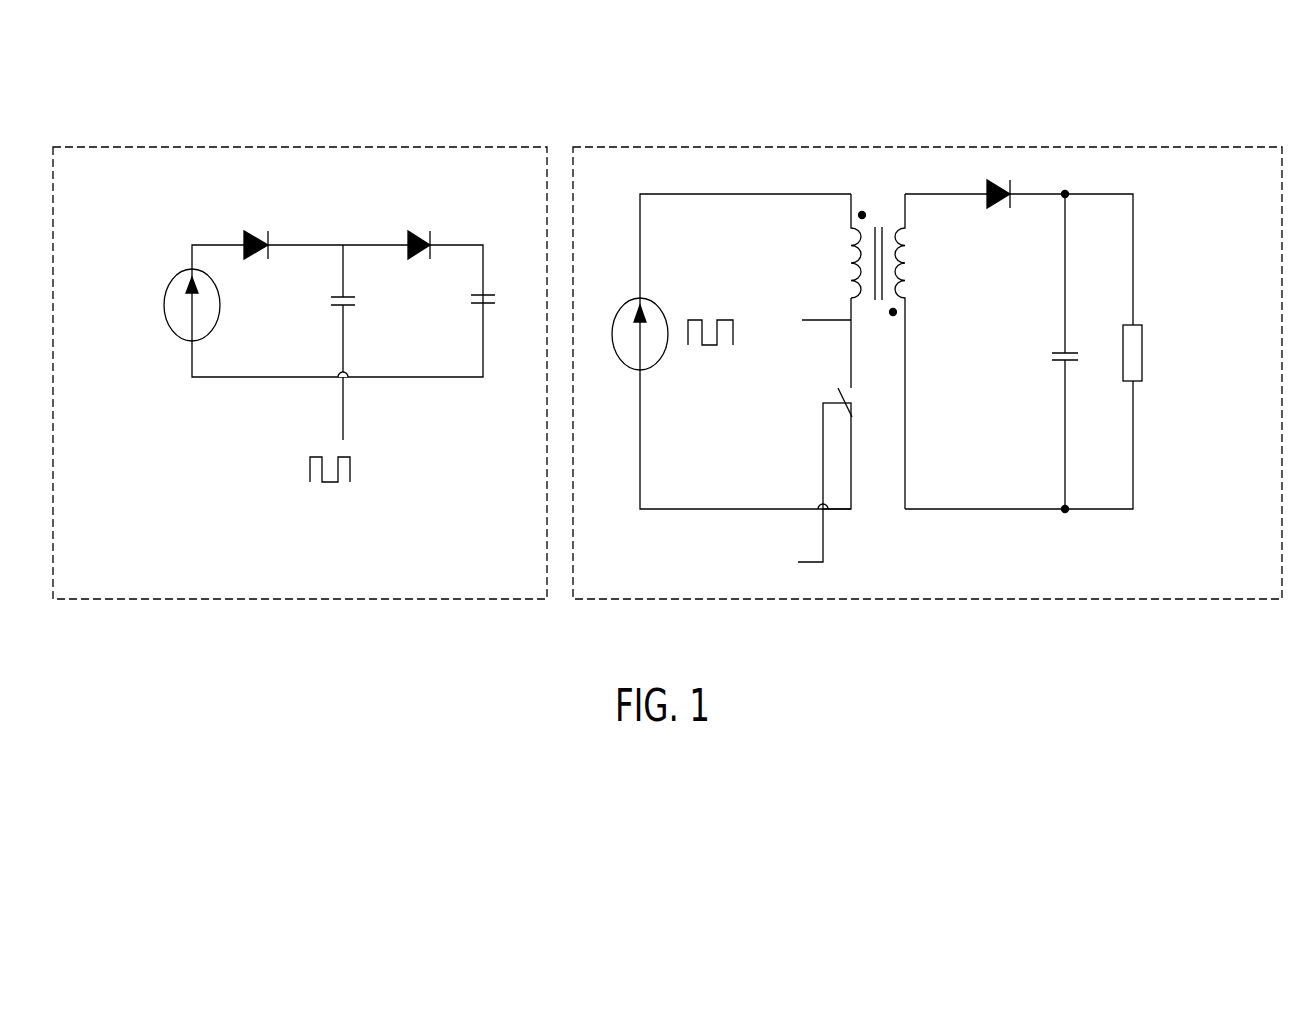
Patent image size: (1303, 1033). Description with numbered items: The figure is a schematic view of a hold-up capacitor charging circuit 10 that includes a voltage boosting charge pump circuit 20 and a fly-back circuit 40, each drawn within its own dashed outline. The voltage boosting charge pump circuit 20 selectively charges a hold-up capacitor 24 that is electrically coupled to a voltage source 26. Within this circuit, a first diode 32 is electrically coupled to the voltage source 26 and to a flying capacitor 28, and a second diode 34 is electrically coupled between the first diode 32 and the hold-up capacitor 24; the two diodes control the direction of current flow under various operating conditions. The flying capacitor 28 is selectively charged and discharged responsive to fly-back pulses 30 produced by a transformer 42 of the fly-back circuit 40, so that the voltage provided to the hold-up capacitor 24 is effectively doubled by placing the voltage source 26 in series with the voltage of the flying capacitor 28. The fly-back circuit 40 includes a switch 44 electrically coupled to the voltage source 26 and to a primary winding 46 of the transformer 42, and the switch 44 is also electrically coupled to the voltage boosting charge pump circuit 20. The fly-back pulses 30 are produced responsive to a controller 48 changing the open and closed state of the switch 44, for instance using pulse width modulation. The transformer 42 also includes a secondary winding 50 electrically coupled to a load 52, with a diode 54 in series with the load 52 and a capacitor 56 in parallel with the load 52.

The hold-up capacitor charging circuit 10 is at (525, 102).
The voltage boosting charge pump circuit 20 is at (298, 146).
The hold-up capacitor 24 is at (484, 334).
The voltage source 26 is at (180, 282).
The flying capacitor 28 is at (345, 333).
The fly-back pulses 30 is at (372, 500).
The first diode 32 is at (253, 231).
The second diode 34 is at (420, 232).
The fly-back circuit 40 is at (877, 146).
The transformer 42 is at (882, 227).
The switch 44 is at (853, 418).
The primary winding 46 is at (851, 235).
The controller 48 is at (701, 548).
The secondary winding 50 is at (913, 280).
The load 52 is at (1143, 353).
The diode 54 is at (995, 179).
The capacitor 56 is at (1063, 390).